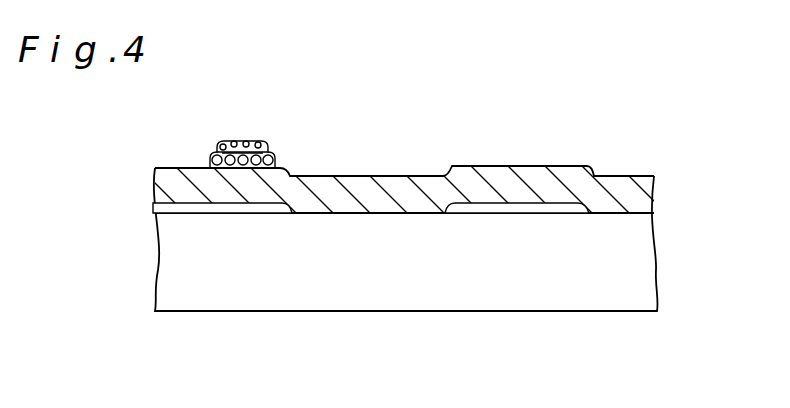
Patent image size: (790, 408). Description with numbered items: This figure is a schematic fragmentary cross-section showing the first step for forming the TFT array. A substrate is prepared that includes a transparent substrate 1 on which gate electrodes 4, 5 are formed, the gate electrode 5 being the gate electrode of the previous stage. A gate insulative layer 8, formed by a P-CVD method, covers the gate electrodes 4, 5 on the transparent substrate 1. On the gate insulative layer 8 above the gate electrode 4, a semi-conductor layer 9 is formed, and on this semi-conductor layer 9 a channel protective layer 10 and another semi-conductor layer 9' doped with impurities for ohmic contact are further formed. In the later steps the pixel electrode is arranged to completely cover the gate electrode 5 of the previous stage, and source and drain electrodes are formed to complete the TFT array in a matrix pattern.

The transparent substrate 1 is at (623, 257).
The gate electrode 4 is at (247, 203).
The gate electrode 5 is at (540, 210).
The gate insulative layer 8 is at (623, 190).
The semi-conductor layer 9 is at (259, 126).
The semi-conductor layer doped with impurities 9' is at (230, 124).
The channel protective layer 10 is at (247, 147).